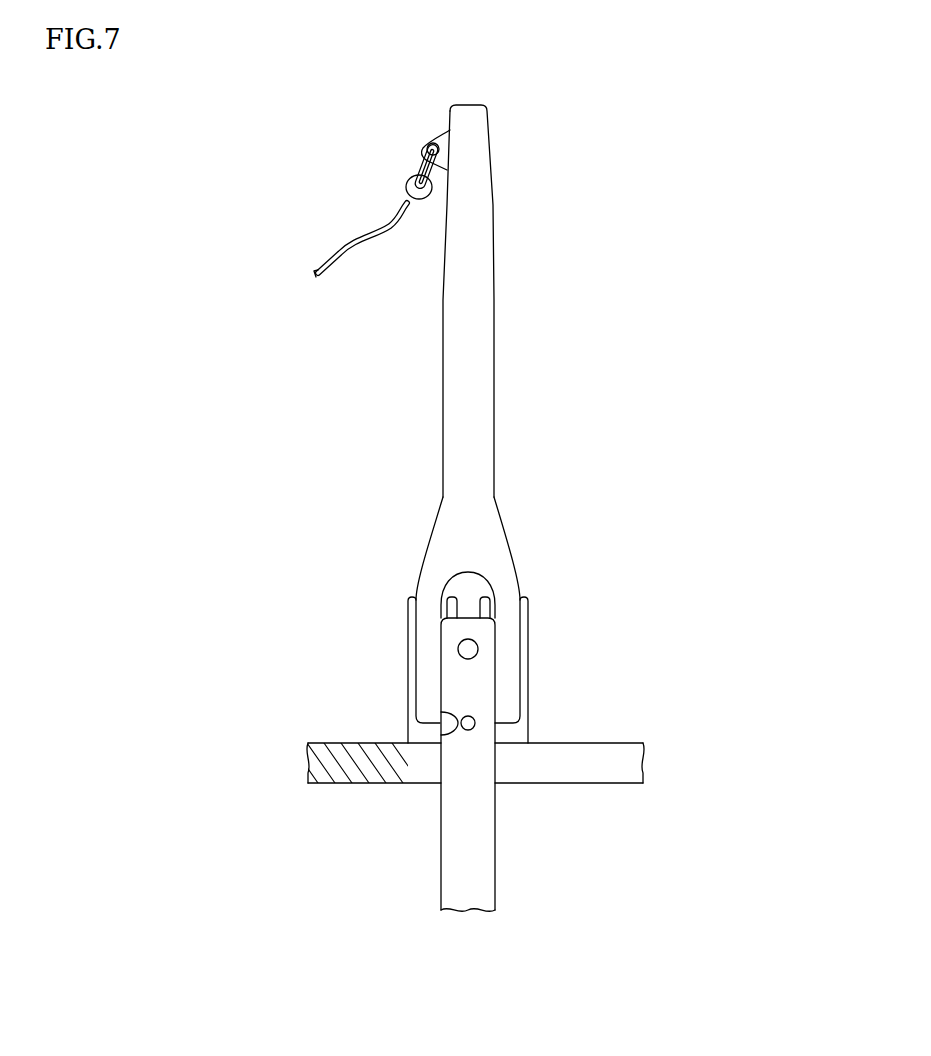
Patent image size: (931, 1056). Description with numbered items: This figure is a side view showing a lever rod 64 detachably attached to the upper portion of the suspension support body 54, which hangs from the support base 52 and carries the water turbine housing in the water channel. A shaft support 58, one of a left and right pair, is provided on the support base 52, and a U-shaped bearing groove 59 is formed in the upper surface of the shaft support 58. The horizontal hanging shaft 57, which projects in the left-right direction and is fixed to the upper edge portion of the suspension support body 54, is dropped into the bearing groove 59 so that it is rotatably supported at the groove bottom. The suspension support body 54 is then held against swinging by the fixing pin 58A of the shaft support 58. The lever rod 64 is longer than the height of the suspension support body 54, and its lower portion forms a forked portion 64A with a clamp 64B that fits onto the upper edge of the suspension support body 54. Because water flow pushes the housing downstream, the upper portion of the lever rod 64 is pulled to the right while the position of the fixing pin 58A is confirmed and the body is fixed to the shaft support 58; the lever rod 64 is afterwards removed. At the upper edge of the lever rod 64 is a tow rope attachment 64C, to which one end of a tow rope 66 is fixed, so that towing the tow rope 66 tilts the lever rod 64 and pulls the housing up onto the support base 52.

The support base 52 is at (347, 785).
The suspension support body 54 is at (442, 841).
The horizontal hanging shaft 57 is at (479, 650).
The shaft support 58 is at (407, 632).
The fixing pin 58A is at (476, 724).
The bearing groove 59 is at (478, 611).
The lever rod 64 is at (497, 312).
The forked portion 64A is at (409, 673).
The clamp 64B is at (440, 733).
The tow rope attachment 64C is at (424, 157).
The tow rope 66 is at (360, 233).